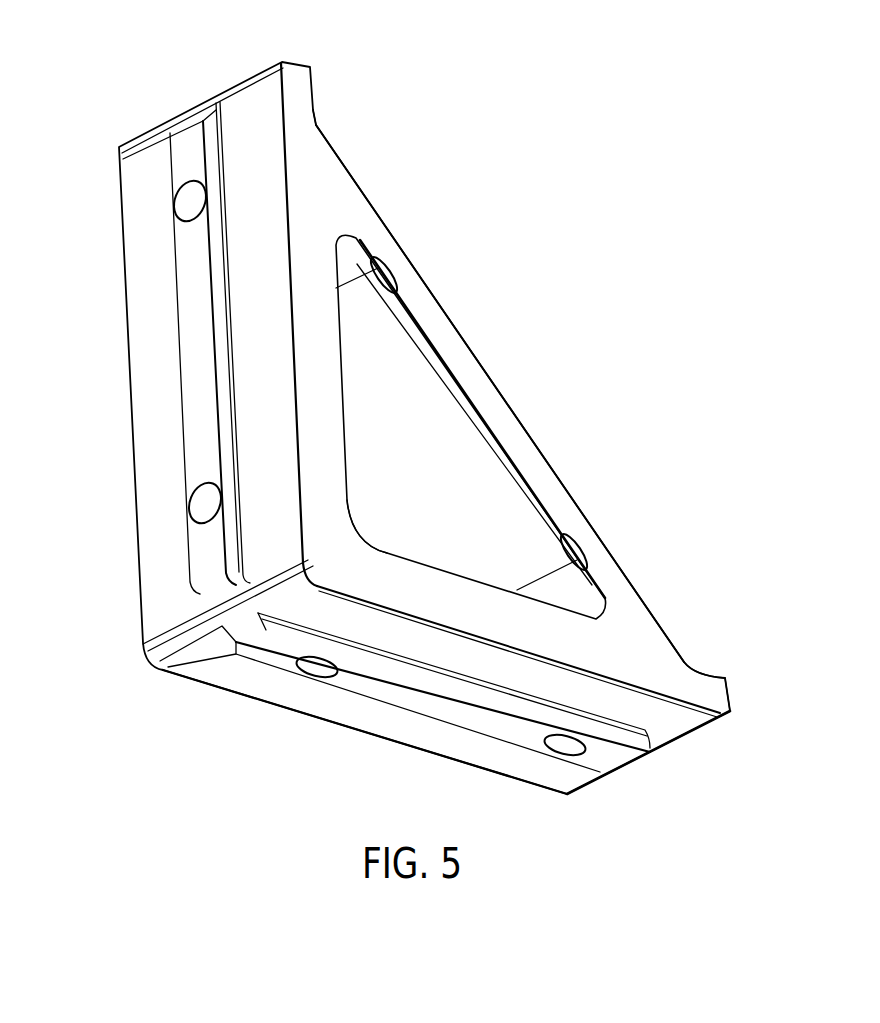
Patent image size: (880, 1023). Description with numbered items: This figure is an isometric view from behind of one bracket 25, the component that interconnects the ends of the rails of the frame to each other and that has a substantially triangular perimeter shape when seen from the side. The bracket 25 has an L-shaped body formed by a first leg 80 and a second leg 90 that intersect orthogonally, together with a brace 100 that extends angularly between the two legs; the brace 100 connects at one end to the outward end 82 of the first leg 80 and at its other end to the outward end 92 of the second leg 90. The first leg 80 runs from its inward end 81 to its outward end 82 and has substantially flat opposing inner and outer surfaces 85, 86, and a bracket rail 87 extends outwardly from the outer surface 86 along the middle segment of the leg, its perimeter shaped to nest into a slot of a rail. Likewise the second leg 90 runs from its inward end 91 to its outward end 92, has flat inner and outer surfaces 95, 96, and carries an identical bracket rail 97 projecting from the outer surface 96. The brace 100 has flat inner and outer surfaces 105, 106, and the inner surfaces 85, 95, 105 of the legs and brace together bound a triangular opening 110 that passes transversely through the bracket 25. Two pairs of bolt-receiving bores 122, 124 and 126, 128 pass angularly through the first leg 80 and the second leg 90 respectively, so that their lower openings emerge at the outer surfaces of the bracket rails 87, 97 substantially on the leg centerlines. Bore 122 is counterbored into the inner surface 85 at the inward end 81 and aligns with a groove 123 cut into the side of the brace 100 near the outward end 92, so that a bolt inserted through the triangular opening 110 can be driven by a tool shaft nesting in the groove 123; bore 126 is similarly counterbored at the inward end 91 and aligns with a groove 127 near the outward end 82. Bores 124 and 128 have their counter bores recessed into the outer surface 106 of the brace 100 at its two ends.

The bracket 25 is at (513, 195).
The first leg 80 is at (517, 673).
The inward end 81 is at (388, 575).
The outward end 82 is at (722, 693).
The inner surface 85 is at (698, 662).
The outer surface 86 is at (555, 700).
The bracket rail 87 is at (415, 703).
The second leg 90 is at (253, 110).
The inward end 91 is at (323, 497).
The outward end 92 is at (314, 92).
The inner surface 95 is at (318, 122).
The outer surface 96 is at (236, 213).
The bracket rail 97 is at (188, 320).
The brace 100 is at (478, 300).
The inner surface 105 is at (353, 393).
The outer surface 106 is at (438, 300).
The triangular opening 110 is at (432, 415).
The bolt-receiving bore 122 is at (316, 667).
The groove 123 is at (388, 266).
The bolt-receiving bore 124 is at (565, 748).
The bolt-receiving bore 126 is at (205, 508).
The groove 127 is at (573, 553).
The bolt-receiving bore 128 is at (188, 204).